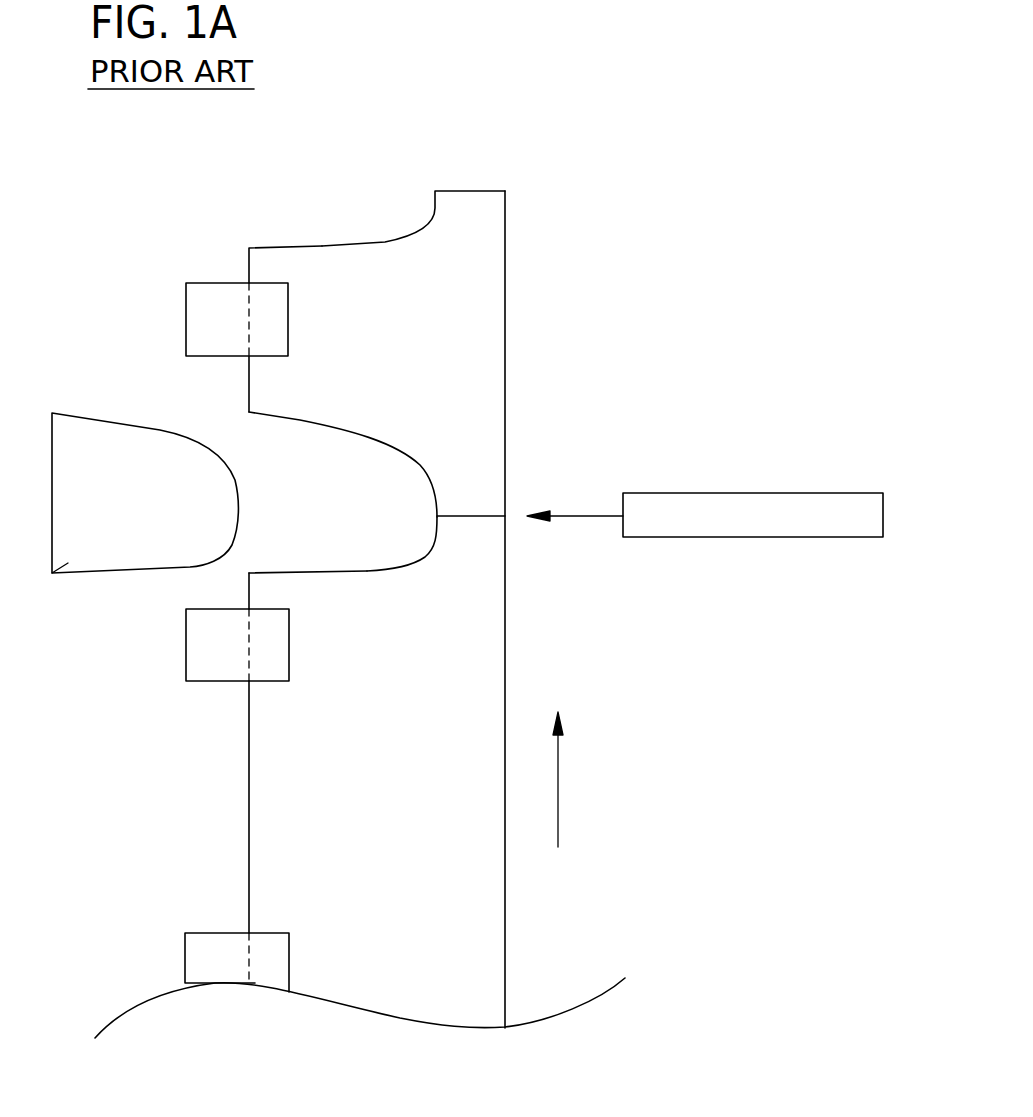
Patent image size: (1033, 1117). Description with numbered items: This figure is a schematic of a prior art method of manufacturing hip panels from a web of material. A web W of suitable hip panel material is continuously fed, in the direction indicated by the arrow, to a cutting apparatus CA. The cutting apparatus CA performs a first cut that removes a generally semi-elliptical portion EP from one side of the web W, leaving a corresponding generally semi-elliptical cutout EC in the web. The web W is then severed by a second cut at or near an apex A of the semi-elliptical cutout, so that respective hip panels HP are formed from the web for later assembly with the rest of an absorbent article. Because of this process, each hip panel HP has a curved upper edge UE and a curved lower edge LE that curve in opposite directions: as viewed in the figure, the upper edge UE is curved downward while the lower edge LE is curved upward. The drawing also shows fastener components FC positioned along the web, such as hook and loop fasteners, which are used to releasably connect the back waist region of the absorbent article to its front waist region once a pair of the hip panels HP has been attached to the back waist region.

The upper edge UE is at (323, 245).
The fastener components FC is at (197, 307).
The semi-elliptical cutout EC is at (310, 518).
The lower edge LE is at (292, 420).
The hip panel HP is at (443, 335).
The apex A is at (431, 494).
The cutting apparatus CA is at (745, 493).
The semi-elliptical portion EP is at (52, 573).
The web W is at (488, 933).